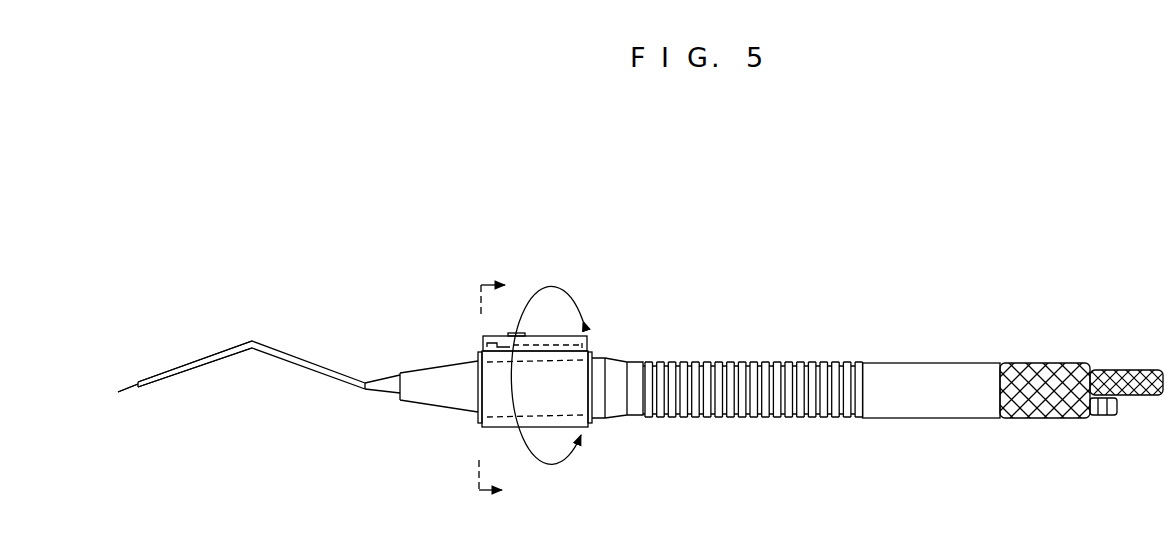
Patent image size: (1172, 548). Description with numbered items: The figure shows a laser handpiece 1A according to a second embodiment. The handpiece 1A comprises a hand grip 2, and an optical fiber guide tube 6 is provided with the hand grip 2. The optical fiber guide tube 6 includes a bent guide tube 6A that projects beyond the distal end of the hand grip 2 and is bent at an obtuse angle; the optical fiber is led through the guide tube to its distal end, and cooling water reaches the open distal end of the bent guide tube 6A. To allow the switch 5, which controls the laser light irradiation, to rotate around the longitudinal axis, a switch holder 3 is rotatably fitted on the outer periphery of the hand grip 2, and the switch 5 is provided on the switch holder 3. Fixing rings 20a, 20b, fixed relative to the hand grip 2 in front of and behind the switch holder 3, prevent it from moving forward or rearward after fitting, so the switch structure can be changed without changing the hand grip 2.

The handpiece 1A is at (775, 265).
The hand grip 2 is at (764, 360).
The switch holder 3 is at (575, 375).
The switch 5 is at (514, 334).
The optical fiber guide tube 6 is at (328, 350).
The bent guide tube 6A is at (277, 350).
The fixing ring 20a is at (478, 394).
The fixing ring 20b is at (593, 394).